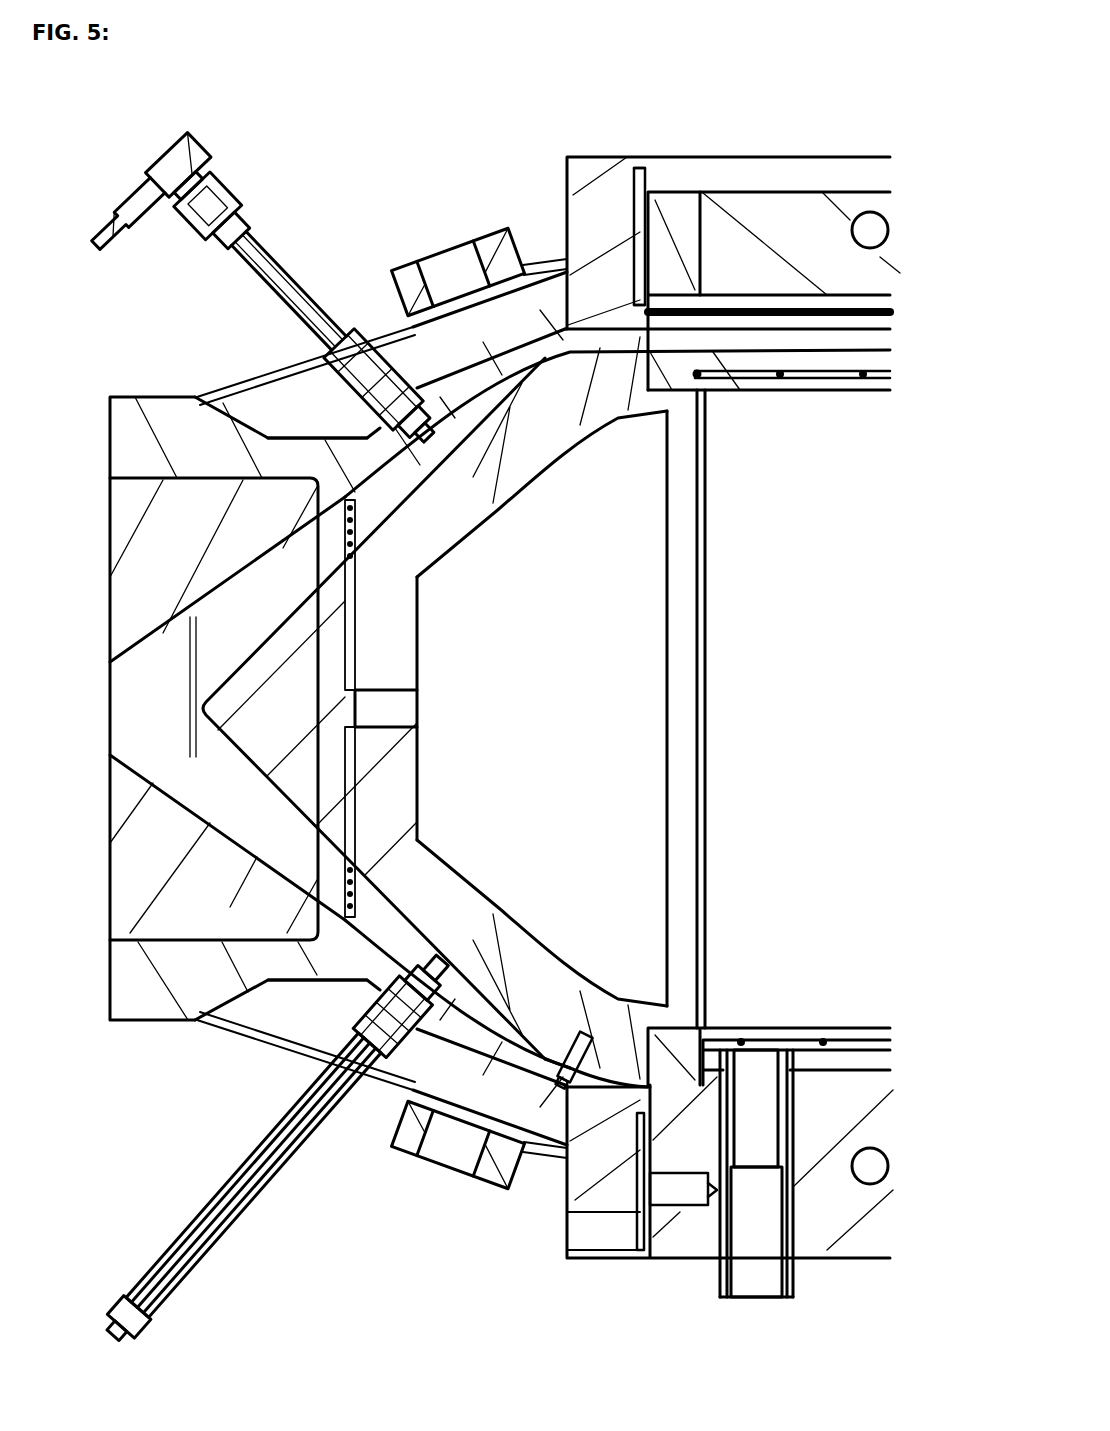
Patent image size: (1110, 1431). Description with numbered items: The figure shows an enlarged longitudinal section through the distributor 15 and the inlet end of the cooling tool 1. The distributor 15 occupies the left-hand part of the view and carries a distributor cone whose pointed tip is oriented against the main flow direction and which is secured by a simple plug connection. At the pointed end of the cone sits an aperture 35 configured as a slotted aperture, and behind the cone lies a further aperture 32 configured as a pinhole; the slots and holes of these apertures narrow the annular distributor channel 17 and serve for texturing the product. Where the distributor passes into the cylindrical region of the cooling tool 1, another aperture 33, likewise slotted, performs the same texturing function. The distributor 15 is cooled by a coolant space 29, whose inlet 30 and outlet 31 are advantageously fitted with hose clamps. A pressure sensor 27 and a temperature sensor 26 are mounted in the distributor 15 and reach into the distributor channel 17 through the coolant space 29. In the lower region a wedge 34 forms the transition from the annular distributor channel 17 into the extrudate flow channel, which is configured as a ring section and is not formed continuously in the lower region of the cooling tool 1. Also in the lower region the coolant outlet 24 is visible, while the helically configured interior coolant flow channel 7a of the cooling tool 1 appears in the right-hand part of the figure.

The cooling tool 1 is at (715, 95).
The distributor 15 is at (455, 105).
The interior coolant flow channel 7a is at (860, 380).
The distributor channel 17 is at (282, 473).
The coolant outlet 24 is at (745, 1287).
The temperature sensor 26 is at (233, 1220).
The pressure sensor 27 is at (248, 180).
The coolant space 29 is at (353, 707).
The inlet 30 is at (445, 1150).
The outlet 31 is at (466, 240).
The aperture 32 is at (275, 544).
The aperture 33 is at (648, 295).
The wedge 34 is at (490, 1017).
The aperture 35 is at (160, 661).